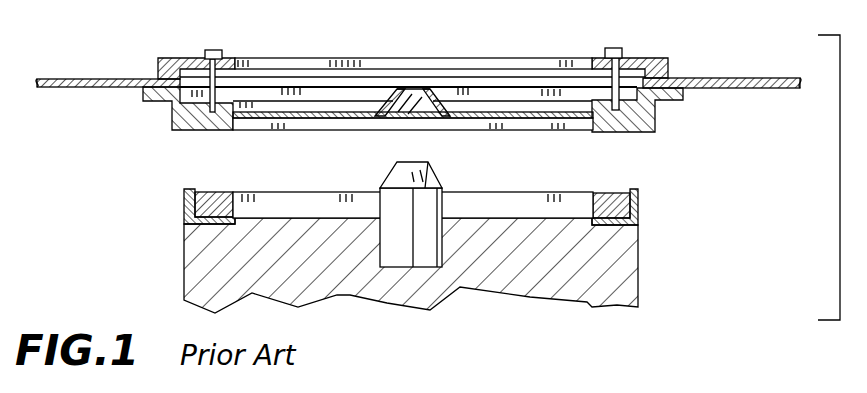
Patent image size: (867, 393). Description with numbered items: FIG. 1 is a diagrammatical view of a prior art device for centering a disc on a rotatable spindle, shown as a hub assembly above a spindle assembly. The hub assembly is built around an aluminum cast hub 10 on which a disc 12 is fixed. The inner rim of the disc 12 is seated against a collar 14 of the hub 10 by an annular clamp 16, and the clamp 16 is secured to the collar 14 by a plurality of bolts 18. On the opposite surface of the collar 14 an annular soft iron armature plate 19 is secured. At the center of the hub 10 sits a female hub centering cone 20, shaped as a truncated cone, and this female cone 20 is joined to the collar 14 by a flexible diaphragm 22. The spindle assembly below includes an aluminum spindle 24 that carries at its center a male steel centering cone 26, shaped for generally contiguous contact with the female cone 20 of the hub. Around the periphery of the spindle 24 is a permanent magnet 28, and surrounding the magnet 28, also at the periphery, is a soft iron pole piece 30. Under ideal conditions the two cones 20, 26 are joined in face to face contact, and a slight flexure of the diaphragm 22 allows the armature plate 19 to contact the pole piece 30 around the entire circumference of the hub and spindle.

The hub 10 is at (305, 102).
The disc 12 is at (96, 77).
The collar 14 is at (172, 109).
The annular clamp 16 is at (181, 58).
The bolts 18 is at (214, 49).
The armature plate 19 is at (194, 131).
The female hub centering cone 20 is at (440, 88).
The flexible diaphragm 22 is at (348, 118).
The spindle 24 is at (628, 278).
The male steel centering cone 26 is at (433, 176).
The permanent magnet 28 is at (208, 192).
The pole piece 30 is at (183, 208).